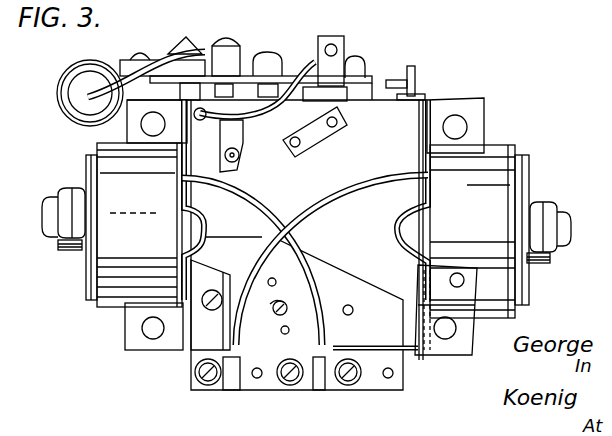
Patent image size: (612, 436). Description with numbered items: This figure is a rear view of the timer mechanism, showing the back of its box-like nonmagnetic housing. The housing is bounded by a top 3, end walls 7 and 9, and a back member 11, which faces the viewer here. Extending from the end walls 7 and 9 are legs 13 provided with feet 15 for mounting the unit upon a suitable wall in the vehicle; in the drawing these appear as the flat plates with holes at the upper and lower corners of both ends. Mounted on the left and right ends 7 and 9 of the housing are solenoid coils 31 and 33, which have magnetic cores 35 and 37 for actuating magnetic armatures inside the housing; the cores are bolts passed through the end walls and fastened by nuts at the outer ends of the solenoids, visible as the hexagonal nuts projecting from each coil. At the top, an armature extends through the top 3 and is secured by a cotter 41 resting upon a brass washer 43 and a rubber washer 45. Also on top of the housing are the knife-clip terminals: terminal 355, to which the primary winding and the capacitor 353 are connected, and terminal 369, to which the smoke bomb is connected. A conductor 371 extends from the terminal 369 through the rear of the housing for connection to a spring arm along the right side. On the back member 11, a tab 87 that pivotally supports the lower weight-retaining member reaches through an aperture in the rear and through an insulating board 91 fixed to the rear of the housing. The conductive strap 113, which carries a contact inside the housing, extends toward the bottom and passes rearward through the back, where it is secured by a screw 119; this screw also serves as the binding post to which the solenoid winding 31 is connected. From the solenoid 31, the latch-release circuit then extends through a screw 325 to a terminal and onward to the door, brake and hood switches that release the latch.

The top 3 is at (374, 97).
The end 7 is at (431, 202).
The end 9 is at (181, 186).
The back member 11 is at (345, 165).
The legs 13 is at (425, 117).
The feet 15 is at (498, 104).
The solenoid coil 31 is at (505, 170).
The solenoid coil 33 is at (98, 180).
The magnetic core 35 is at (565, 230).
The magnetic core 37 is at (48, 210).
The cotter 41 is at (409, 66).
The brass washer 43 is at (420, 80).
The rubber washer 45 is at (406, 99).
The tab 87 is at (277, 312).
The insulating board 91 is at (286, 303).
The conductive strap 113 is at (195, 348).
The screw 119 is at (198, 377).
The screw 325 is at (347, 385).
The capacitor 353 is at (76, 72).
The terminal 355 is at (236, 44).
The terminal 369 is at (344, 53).
The conductor 371 is at (262, 113).